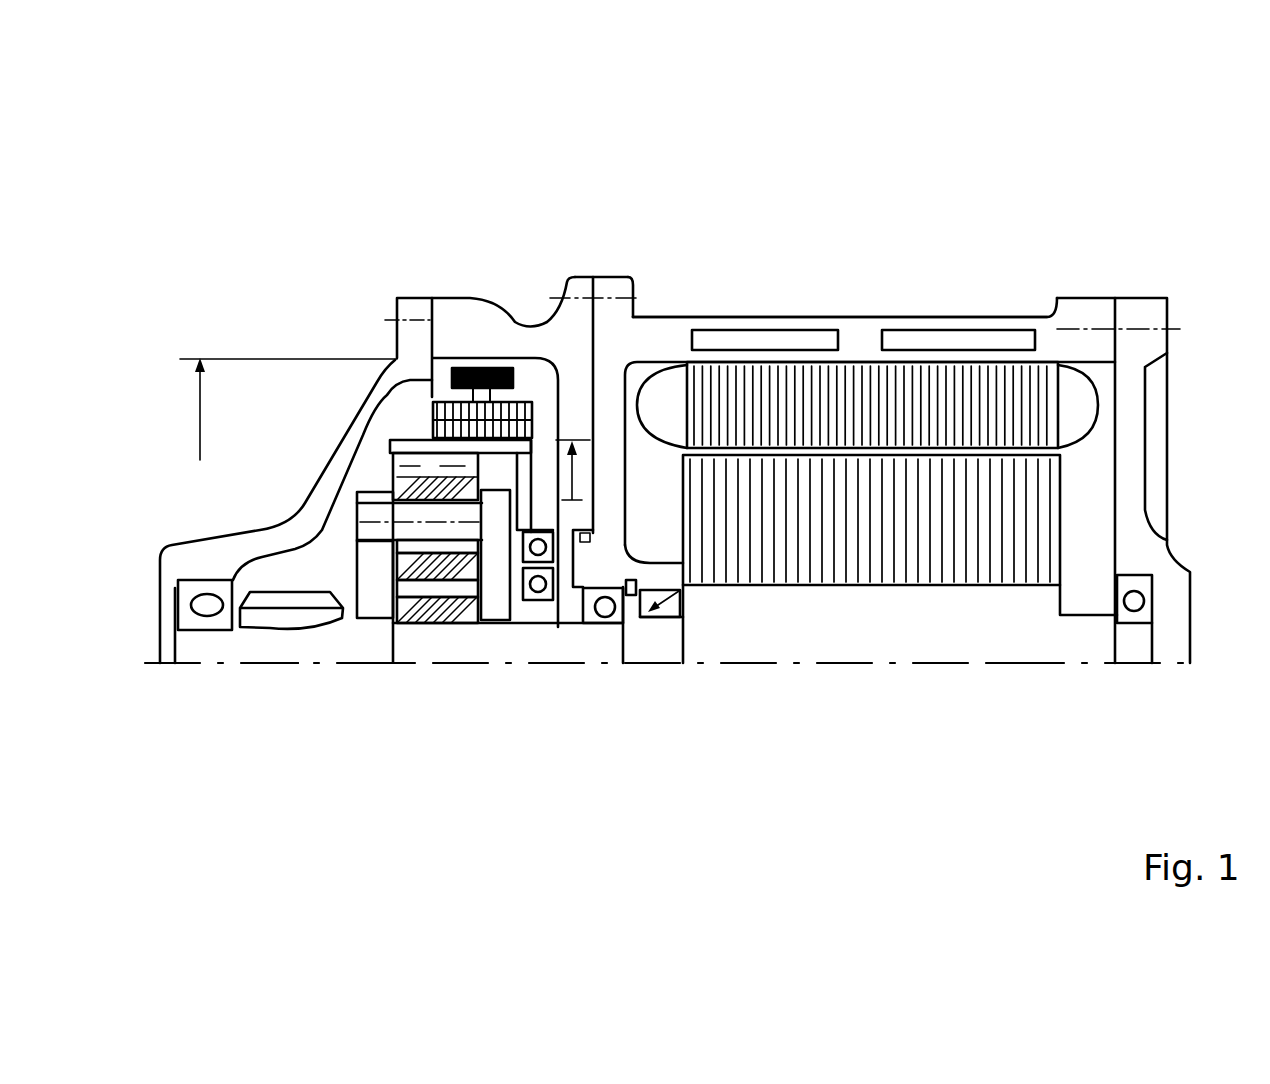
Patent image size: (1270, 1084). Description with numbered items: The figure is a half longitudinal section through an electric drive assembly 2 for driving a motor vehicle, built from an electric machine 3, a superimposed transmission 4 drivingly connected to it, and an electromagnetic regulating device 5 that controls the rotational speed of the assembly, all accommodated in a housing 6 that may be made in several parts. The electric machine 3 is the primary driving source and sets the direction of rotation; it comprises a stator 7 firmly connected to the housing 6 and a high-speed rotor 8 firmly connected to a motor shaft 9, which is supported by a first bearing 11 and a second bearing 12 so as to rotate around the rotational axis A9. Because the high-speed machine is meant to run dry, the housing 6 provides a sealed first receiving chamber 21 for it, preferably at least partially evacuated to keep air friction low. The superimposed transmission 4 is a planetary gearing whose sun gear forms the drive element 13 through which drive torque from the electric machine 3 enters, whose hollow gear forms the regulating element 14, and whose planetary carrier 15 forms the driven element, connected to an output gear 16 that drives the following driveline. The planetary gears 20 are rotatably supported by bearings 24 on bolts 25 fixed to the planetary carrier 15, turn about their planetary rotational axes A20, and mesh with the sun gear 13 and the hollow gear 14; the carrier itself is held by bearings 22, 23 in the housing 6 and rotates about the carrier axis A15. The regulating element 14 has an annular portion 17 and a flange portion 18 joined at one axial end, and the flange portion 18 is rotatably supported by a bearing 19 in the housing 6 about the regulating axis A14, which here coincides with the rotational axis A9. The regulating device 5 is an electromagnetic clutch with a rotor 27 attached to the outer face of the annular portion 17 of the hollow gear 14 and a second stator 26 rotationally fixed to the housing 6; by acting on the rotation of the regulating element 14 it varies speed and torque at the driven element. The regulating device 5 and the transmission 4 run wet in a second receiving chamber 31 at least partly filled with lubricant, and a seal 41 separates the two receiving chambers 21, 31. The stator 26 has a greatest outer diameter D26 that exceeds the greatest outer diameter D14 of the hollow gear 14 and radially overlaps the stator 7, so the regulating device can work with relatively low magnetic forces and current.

The electric drive assembly 2 is at (697, 172).
The electric machine 3 is at (863, 343).
The superimposed transmission 4 is at (399, 535).
The electromagnetic regulating device 5 is at (491, 333).
The housing 6 is at (1098, 290).
The stator 7 is at (963, 380).
The high-speed rotor 8 is at (920, 540).
The motor shaft 9 is at (868, 633).
The first bearing 11 is at (1155, 598).
The second bearing 12 is at (615, 625).
The sun gear 13 is at (445, 628).
The hollow gear 14 is at (425, 439).
The planetary carrier 15 is at (362, 640).
The output gear 16 is at (307, 618).
The annular portion 17 is at (533, 352).
The flange portion 18 is at (596, 358).
The bearing 19 is at (557, 627).
The planetary gears 20 is at (470, 628).
The first receiving chamber 21 is at (658, 457).
The bearing 22 is at (535, 627).
The bearing 23 is at (203, 630).
The bearings 24 is at (370, 458).
The bolts 25 is at (358, 525).
The stator 26 is at (450, 357).
The rotor 27 is at (435, 358).
The second receiving chamber 31 is at (612, 368).
The seal 41 is at (672, 618).
The greatest outer diameter of the stator D26 is at (270, 409).
The greatest outer diameter of the hollow gear D14 is at (573, 452).
The carrier axis A15 is at (265, 665).
The regulating axis A14 is at (282, 748).
The planetary rotational axes A20 is at (408, 630).
The rotational axis A9 is at (1010, 663).